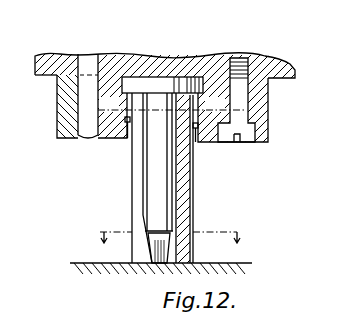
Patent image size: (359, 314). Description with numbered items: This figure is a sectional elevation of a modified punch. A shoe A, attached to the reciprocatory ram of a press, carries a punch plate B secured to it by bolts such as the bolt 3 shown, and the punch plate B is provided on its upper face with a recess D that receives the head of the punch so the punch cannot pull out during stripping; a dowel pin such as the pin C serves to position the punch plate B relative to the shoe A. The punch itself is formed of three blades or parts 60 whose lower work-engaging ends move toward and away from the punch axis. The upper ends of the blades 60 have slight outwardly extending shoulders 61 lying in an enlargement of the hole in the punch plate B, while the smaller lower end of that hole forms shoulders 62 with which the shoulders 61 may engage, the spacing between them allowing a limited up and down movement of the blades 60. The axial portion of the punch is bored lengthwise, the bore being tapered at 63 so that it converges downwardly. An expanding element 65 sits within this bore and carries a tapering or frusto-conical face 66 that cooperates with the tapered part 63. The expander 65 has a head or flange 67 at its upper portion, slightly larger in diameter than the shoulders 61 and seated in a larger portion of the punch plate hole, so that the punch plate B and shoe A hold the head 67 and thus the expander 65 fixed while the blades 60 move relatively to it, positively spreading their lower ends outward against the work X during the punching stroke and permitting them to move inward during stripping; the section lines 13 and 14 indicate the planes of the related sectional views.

The shoe A is at (268, 68).
The punch plate B is at (263, 109).
The block C is at (80, 99).
The recess D is at (112, 77).
The work X is at (243, 264).
The bolt 3 is at (241, 58).
The section line 13 is at (210, 96).
The section line 14 is at (167, 246).
The blades 60 is at (134, 177).
The shoulders 61 is at (184, 78).
The shoulders 62 is at (124, 137).
The tapered part of the bore 63 is at (190, 222).
The expanding element 65 is at (153, 188).
The frusto-conical face 66 is at (158, 238).
The head or flange 67 is at (143, 78).